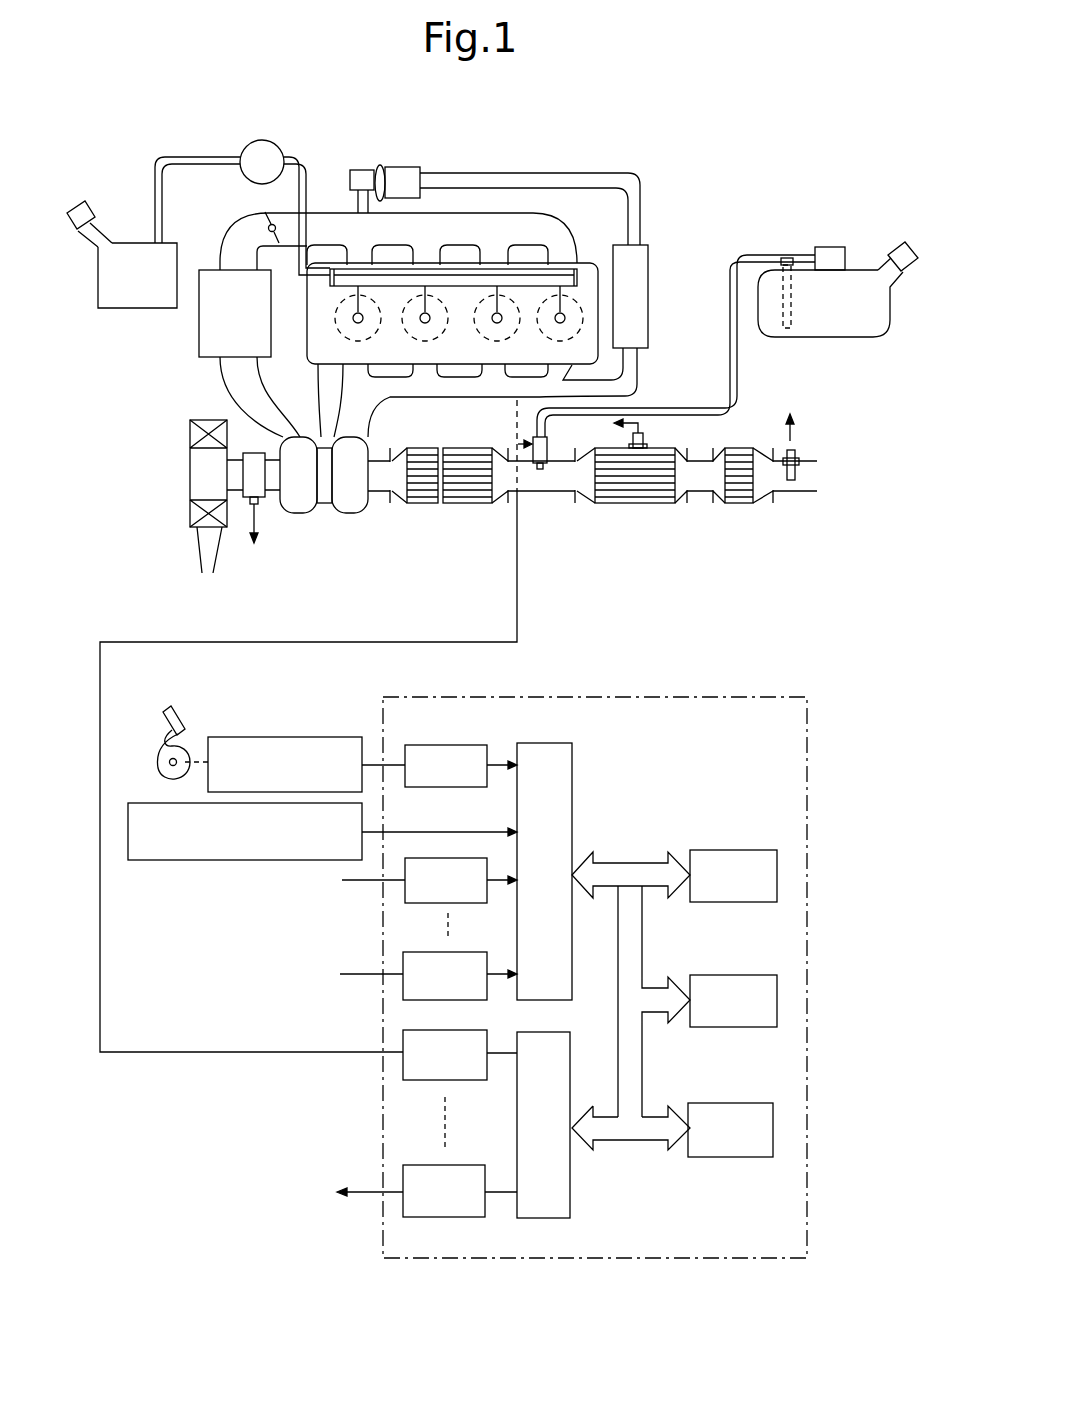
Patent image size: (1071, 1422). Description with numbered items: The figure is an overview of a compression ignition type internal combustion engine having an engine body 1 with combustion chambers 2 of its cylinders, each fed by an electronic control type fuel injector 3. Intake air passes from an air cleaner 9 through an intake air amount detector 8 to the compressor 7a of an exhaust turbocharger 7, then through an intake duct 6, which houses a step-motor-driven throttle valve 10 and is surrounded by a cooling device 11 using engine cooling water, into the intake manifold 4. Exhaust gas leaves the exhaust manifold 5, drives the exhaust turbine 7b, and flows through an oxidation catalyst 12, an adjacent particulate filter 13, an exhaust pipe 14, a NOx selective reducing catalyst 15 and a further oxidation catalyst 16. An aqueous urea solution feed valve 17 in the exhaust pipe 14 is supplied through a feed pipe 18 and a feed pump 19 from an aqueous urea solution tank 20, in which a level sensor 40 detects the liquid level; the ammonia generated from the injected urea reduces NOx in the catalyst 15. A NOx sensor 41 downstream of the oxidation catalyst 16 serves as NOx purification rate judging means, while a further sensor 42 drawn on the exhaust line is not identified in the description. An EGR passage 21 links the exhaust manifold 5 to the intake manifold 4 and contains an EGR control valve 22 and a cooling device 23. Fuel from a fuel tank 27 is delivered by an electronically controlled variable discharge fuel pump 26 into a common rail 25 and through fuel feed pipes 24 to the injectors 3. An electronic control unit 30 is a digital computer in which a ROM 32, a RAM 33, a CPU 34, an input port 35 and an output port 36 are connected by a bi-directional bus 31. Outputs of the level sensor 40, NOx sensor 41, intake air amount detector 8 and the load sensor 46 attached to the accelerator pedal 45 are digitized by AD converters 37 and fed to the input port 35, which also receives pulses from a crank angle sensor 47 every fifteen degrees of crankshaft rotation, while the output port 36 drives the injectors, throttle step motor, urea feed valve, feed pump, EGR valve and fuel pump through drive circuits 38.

The engine body 1 is at (603, 264).
The combustion chamber 2 is at (356, 336).
The fuel injector 3 is at (343, 326).
The intake manifold 4 is at (547, 226).
The exhaust manifold 5 is at (448, 390).
The intake duct 6 is at (223, 252).
The exhaust turbocharger 7 is at (322, 526).
The compressor 7a is at (297, 508).
The exhaust turbine 7b is at (323, 517).
The intake air amount detector 8 is at (263, 497).
The air cleaner 9 is at (190, 476).
The throttle valve 10 is at (268, 225).
The cooling device 11 is at (207, 333).
The oxidation catalyst 12 is at (425, 503).
The particulate filter 13 is at (476, 503).
The exhaust pipe 14 is at (550, 495).
The NOx selective reducing catalyst 15 is at (636, 503).
The oxidation catalyst 16 is at (742, 503).
The aqueous urea solution feed valve 17 is at (543, 453).
The feed pipe 18 is at (745, 410).
The feed pump 19 is at (832, 248).
The aqueous urea solution tank 20 is at (853, 338).
The EGR passage 21 is at (520, 175).
The EGR control valve 22 is at (363, 172).
The cooling device 23 is at (651, 297).
The fuel feed pipe 24 is at (352, 311).
The common rail 25 is at (458, 272).
The fuel pump 26 is at (255, 140).
The fuel tank 27 is at (120, 322).
The electronic control unit 30 is at (759, 698).
The bi-directional bus 31 is at (633, 862).
The ROM 32 is at (735, 850).
The RAM 33 is at (735, 975).
The CPU 34 is at (732, 1103).
The input port 35 is at (558, 744).
The output port 36 is at (571, 1196).
The AD converter 37 is at (452, 745).
The drive circuit 38 is at (403, 1073).
The level sensor 40 is at (793, 300).
The NOx sensor 41 is at (800, 462).
The exhaust gas sensor 42 is at (648, 432).
The accelerator pedal 45 is at (180, 716).
The load sensor 46 is at (270, 737).
The crank angle sensor 47 is at (213, 860).